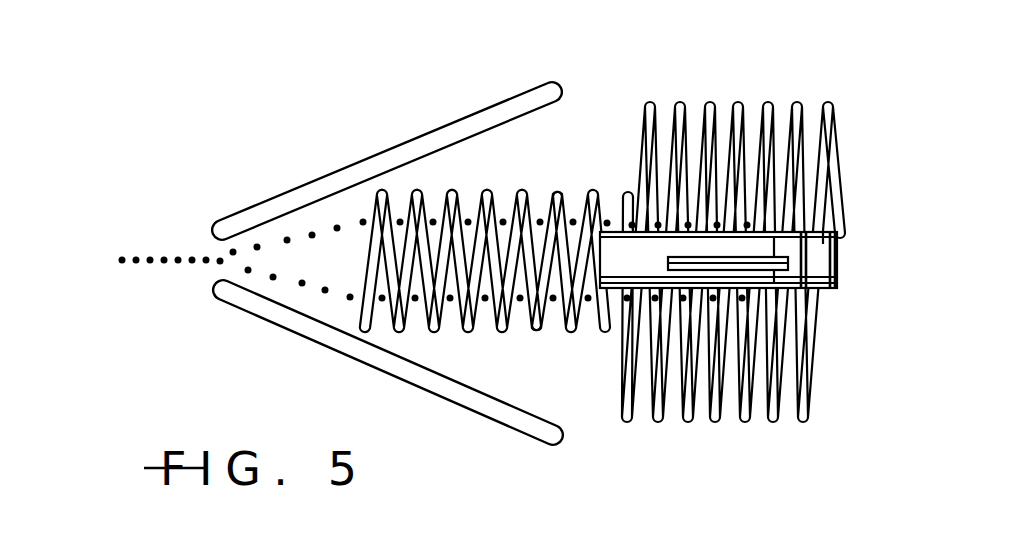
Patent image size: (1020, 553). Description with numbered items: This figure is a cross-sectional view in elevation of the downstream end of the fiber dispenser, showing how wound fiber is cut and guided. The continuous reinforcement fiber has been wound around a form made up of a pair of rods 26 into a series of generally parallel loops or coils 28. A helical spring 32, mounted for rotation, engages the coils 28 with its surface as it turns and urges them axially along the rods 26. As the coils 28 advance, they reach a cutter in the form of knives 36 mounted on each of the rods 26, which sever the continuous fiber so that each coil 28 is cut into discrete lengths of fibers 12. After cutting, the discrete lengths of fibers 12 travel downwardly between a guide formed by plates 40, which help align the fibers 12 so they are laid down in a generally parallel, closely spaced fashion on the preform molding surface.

The discrete lengths of fibers 12 is at (148, 257).
The rods 26 is at (823, 238).
The coils 28 is at (845, 332).
The helical spring 32 is at (682, 107).
The knives 36 is at (680, 273).
The plates 40 is at (367, 157).